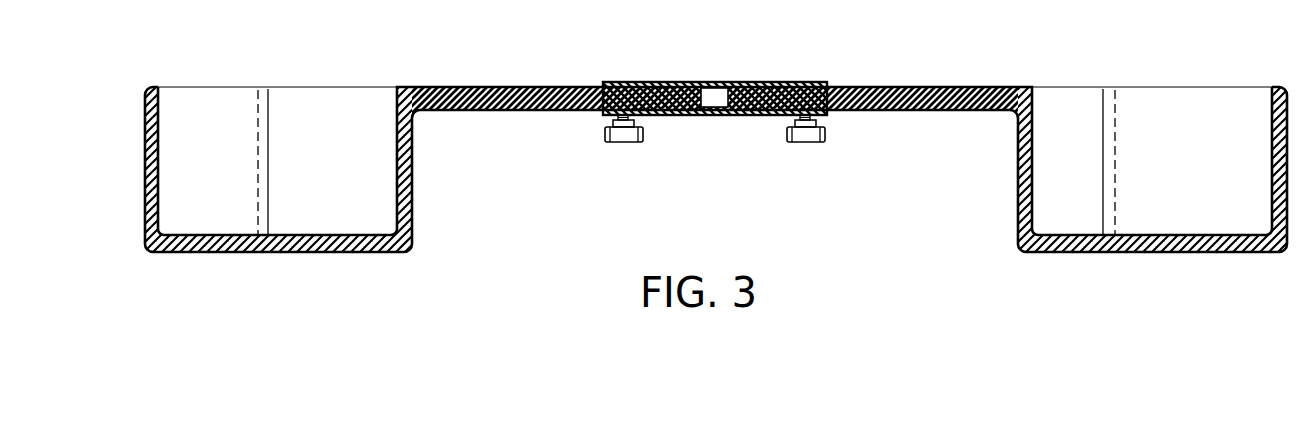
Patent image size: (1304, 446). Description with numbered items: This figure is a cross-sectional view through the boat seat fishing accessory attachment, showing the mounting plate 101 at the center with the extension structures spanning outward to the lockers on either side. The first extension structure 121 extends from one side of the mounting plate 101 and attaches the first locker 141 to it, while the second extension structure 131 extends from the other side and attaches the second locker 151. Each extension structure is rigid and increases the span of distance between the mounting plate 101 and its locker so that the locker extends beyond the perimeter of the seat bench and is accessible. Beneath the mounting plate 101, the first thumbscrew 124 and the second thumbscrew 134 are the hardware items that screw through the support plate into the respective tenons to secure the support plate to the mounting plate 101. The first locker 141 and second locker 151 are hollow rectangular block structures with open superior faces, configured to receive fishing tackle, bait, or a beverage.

The mounting plate 101 is at (722, 82).
The first extension structure 121 is at (520, 87).
The first thumbscrew 124 is at (622, 142).
The second extension structure 131 is at (908, 87).
The second thumbscrew 134 is at (803, 142).
The first locker 141 is at (337, 117).
The second locker 151 is at (1170, 108).